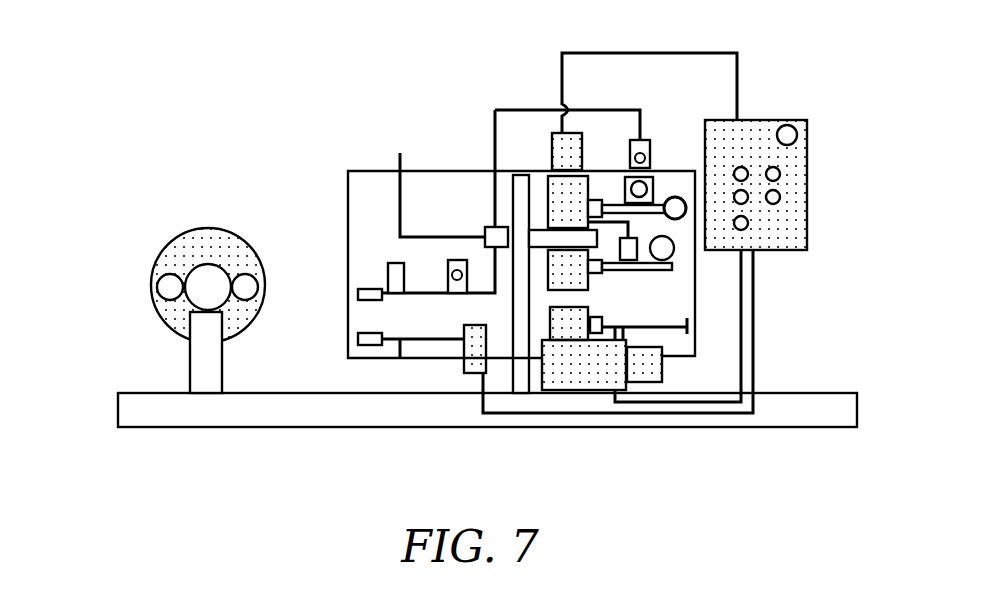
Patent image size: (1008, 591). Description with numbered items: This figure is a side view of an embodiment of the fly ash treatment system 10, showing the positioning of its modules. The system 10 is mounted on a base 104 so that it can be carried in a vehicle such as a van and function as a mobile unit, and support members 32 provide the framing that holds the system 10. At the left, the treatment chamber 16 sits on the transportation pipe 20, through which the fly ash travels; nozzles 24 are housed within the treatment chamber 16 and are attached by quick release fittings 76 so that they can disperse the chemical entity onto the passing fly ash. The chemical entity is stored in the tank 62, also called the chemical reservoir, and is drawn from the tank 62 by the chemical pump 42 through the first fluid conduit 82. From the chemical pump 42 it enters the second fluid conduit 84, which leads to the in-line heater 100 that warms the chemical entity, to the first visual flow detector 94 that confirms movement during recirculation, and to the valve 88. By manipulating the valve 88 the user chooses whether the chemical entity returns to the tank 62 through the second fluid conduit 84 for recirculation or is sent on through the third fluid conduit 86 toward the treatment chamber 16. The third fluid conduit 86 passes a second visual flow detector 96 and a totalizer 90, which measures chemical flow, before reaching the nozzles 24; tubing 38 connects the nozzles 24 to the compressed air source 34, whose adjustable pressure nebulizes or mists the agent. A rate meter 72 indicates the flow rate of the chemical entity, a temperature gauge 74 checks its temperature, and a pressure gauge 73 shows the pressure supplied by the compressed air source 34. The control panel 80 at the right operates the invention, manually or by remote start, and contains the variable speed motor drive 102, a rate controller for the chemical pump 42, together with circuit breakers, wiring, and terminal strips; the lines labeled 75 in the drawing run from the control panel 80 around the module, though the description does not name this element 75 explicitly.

The fly ash treatment system 10 is at (255, 90).
The treatment chamber 16 is at (177, 253).
The transportation pipe 20 is at (205, 288).
The quick release fitting 76 is at (170, 292).
The support members 32 is at (198, 357).
The base 104 is at (130, 403).
The tank 62 is at (348, 187).
The second fluid conduit 84 is at (523, 110).
The power line 75 is at (685, 53).
The tubing 38 is at (400, 362).
The nozzle 24 is at (365, 293).
The third fluid conduit 86 is at (408, 294).
The totalizer 90 is at (388, 268).
The second visual flow detector 96 is at (455, 273).
The valve 88 is at (493, 228).
The compressed air source 34 is at (477, 372).
The rate meter 72 is at (600, 178).
The in-line heater 100 is at (552, 313).
The chemical pump 42 is at (600, 382).
The variable speed motor drive 102 is at (643, 378).
The first visual flow detector 94 is at (643, 157).
The temperature gauge 74 is at (677, 195).
The pressure gauge 73 is at (667, 250).
The first fluid conduit 82 is at (665, 325).
The control panel 80 is at (797, 153).